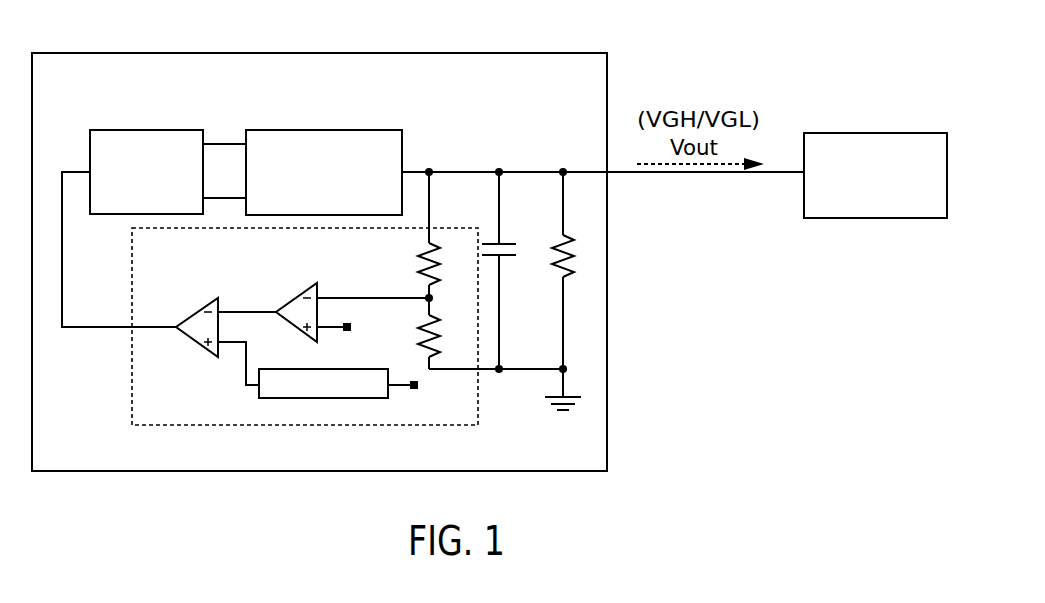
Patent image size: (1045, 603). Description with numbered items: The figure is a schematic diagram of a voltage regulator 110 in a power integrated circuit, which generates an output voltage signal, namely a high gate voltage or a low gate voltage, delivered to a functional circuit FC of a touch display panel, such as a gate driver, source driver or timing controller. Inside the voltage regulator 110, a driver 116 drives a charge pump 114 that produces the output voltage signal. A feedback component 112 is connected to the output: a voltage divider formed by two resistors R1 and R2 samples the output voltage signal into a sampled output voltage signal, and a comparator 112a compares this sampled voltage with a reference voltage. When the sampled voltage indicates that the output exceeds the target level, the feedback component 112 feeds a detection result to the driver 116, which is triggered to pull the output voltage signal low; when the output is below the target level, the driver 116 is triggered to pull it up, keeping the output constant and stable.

The voltage regulator 110 is at (507, 53).
The feedback component 112 is at (353, 314).
The comparator 112a is at (298, 293).
The charge pump 114 is at (402, 152).
The driver 116 is at (173, 130).
The functional circuit FC is at (860, 133).
The resistor R1 is at (444, 235).
The resistor R2 is at (444, 333).